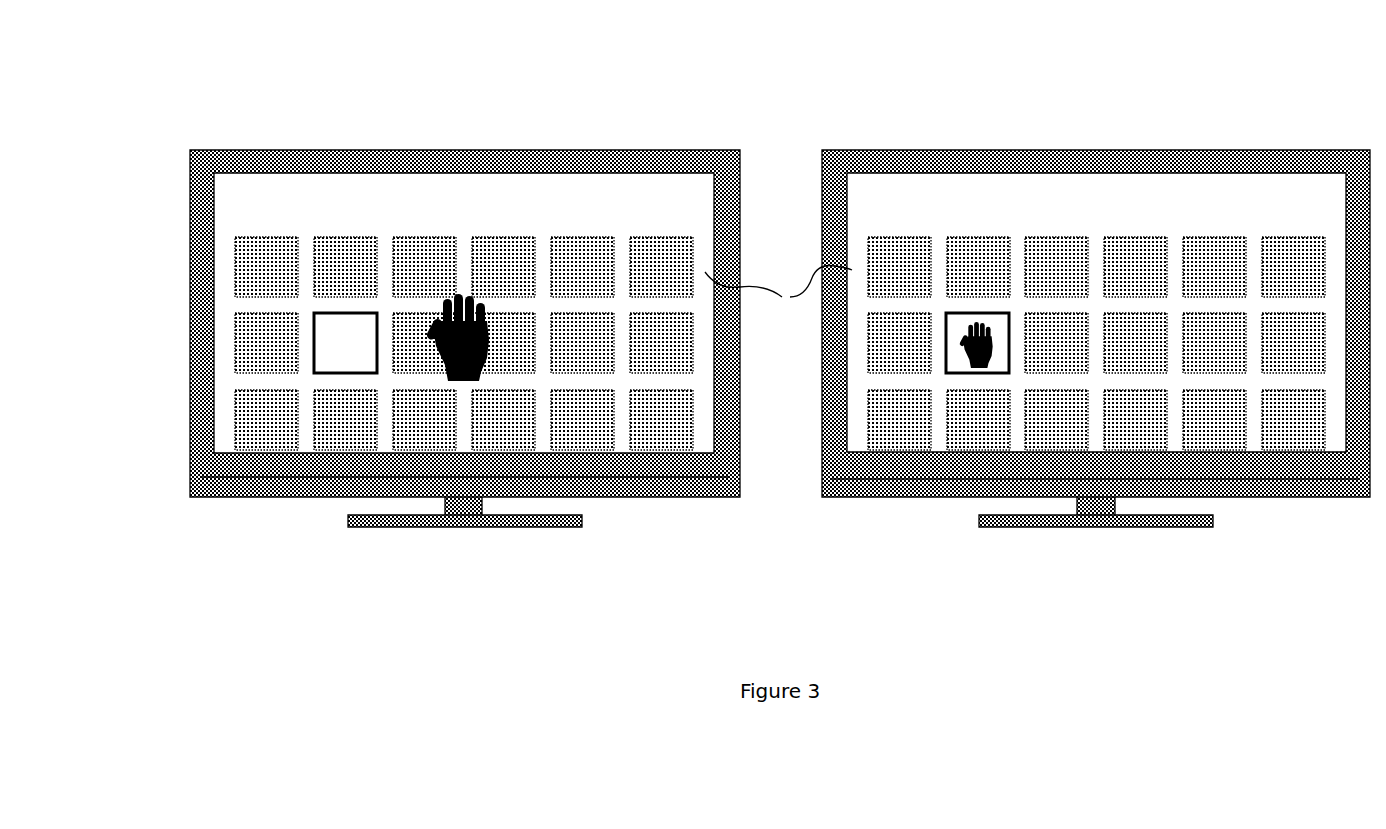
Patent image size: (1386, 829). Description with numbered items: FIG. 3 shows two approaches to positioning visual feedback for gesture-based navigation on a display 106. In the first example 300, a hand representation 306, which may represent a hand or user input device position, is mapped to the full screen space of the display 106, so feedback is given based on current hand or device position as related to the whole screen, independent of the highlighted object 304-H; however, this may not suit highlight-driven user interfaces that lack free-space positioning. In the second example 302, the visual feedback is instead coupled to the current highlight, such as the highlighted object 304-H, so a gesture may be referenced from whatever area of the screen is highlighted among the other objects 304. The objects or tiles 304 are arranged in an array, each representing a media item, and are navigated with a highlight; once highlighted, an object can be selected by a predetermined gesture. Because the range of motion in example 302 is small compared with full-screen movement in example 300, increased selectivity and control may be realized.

The example of feedback position relative to display screen 300 is at (285, 71).
The example of feedback position relative to highlighted object 302 is at (915, 71).
The objects or tiles 304 is at (651, 247).
The highlighted object 304-H is at (990, 223).
The hand representation 306 is at (478, 375).
The display screen 106 is at (778, 294).